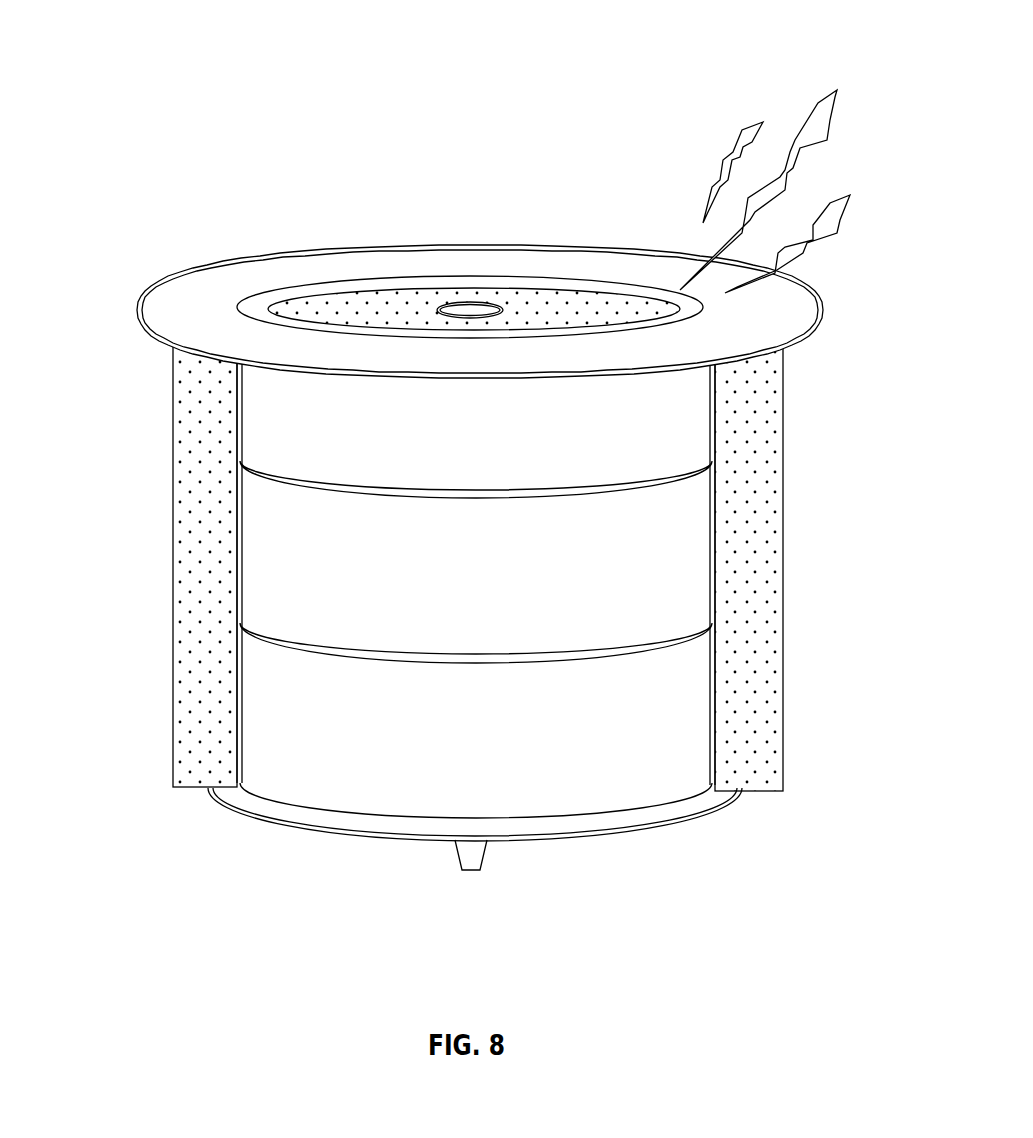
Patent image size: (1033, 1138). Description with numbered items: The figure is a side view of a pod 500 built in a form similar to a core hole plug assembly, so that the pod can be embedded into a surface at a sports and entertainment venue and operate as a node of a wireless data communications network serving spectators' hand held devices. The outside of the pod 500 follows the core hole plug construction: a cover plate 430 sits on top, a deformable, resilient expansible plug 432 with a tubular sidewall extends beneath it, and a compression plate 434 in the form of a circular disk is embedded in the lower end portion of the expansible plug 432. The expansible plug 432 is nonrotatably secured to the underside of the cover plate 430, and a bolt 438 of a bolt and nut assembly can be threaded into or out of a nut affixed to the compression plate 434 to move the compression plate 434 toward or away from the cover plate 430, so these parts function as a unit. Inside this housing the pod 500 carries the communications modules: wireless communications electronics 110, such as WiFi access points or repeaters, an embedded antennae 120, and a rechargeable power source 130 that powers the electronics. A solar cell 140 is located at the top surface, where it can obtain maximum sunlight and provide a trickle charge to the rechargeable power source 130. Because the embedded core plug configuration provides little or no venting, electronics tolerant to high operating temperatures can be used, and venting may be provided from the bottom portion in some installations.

The pod 500 is at (441, 470).
The cover plate 430 is at (153, 313).
The expansible plug 432 is at (177, 507).
The compression plate 434 is at (260, 815).
The bolt 438 is at (470, 308).
The solar cell 140 is at (348, 303).
The antennae 120 is at (650, 435).
The wireless communications electronics 110 is at (657, 562).
The rechargeable power source 130 is at (657, 718).